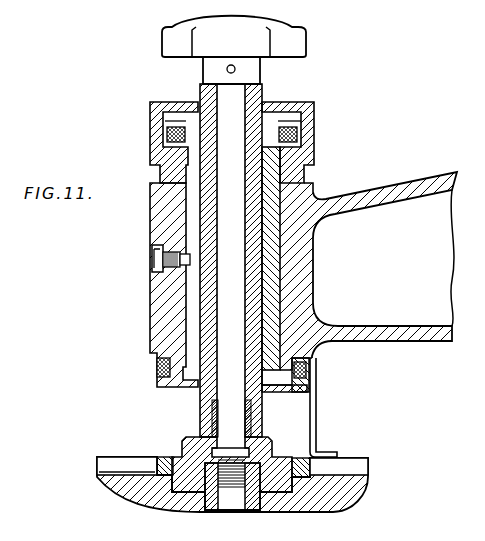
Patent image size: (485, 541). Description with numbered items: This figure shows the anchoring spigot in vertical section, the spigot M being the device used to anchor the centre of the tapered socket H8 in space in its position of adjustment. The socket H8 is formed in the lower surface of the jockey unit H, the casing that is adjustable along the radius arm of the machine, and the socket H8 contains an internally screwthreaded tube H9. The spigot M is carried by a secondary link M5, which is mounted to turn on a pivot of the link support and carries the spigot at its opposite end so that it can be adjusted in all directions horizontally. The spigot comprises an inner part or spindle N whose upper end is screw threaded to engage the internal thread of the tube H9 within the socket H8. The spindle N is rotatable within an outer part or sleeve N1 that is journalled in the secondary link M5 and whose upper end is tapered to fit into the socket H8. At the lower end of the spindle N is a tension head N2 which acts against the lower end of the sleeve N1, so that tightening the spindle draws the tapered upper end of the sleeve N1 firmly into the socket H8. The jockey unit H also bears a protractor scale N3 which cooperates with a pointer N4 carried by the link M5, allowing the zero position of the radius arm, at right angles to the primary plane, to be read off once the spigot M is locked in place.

The tension head N2 is at (288, 44).
The sleeve N1 is at (210, 301).
The spindle N is at (237, 221).
The secondary link M5 is at (385, 336).
The spigot M is at (182, 405).
The pointer N4 is at (314, 417).
The protractor scale N3 is at (352, 468).
The tapered socket H8 is at (172, 455).
The internally screwthreaded tube H9 is at (207, 505).
The jockey unit H is at (315, 495).